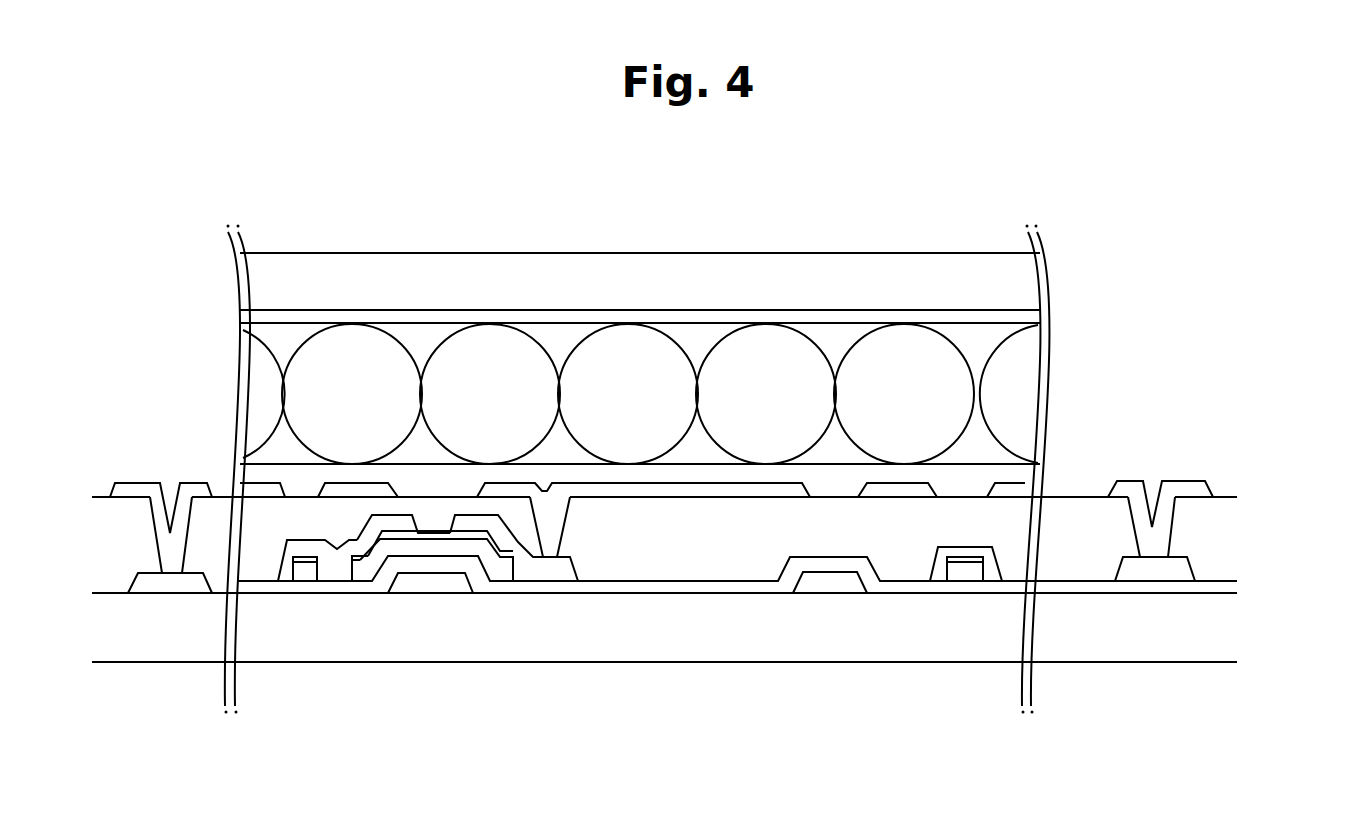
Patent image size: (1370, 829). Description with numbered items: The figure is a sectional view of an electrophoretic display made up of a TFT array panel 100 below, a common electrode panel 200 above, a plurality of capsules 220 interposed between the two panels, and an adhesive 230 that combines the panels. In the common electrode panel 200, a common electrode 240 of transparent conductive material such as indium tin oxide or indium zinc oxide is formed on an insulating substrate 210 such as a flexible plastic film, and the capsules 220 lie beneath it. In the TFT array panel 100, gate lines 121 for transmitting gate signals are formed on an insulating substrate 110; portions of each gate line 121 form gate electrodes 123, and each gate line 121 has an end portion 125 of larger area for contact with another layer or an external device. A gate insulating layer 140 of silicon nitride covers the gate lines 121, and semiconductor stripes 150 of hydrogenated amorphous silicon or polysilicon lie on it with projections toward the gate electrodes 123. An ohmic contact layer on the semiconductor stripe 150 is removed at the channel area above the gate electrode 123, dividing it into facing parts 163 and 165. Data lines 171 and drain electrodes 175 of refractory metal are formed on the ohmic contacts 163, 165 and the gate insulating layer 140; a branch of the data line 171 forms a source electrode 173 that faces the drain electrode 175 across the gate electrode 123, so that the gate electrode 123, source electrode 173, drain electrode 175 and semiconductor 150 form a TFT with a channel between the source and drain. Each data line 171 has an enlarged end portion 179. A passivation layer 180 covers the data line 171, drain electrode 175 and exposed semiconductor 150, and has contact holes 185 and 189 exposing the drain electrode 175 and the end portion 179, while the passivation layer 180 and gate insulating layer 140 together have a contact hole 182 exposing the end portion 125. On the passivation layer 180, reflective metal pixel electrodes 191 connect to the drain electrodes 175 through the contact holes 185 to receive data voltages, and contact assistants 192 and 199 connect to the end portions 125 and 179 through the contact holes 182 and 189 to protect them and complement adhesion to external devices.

The TFT array panel 100 is at (682, 603).
The insulating substrate 110 is at (652, 660).
The gate line 121 is at (832, 585).
The gate electrode 123 is at (443, 582).
The end portion of gate line 125 is at (195, 587).
The gate insulating layer 140 is at (489, 578).
The semiconductor stripe 150 is at (300, 570).
The ohmic contact layer 163 is at (359, 560).
The ohmic contact layer 165 is at (503, 555).
The data line 171 is at (284, 568).
The source electrode 173 is at (400, 522).
The drain electrode 175 is at (557, 573).
The end portion of data line 179 is at (1132, 575).
The passivation layer 180 is at (92, 487).
The contact hole 182 is at (152, 556).
The contact hole 185 is at (563, 538).
The contact hole 189 is at (1168, 538).
The pixel electrode 191 is at (735, 490).
The contact assistant 192 is at (138, 483).
The contact assistant 199 is at (1163, 489).
The common electrode panel 200 is at (736, 465).
The insulating substrate 210 is at (768, 265).
The capsule 220 is at (962, 333).
The adhesive 230 is at (1010, 470).
The common electrode 240 is at (878, 310).